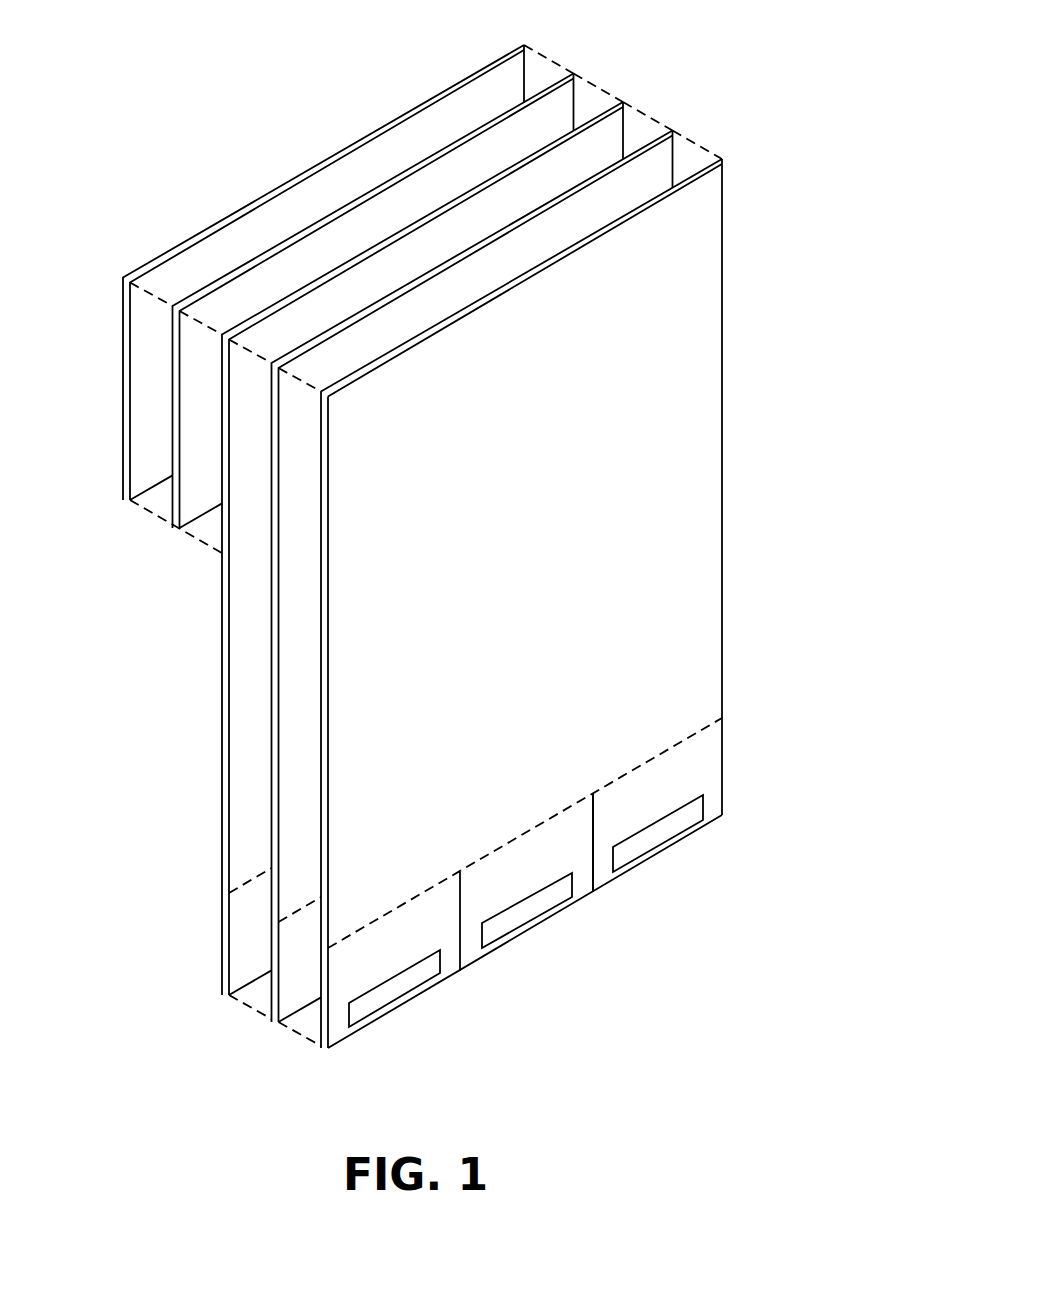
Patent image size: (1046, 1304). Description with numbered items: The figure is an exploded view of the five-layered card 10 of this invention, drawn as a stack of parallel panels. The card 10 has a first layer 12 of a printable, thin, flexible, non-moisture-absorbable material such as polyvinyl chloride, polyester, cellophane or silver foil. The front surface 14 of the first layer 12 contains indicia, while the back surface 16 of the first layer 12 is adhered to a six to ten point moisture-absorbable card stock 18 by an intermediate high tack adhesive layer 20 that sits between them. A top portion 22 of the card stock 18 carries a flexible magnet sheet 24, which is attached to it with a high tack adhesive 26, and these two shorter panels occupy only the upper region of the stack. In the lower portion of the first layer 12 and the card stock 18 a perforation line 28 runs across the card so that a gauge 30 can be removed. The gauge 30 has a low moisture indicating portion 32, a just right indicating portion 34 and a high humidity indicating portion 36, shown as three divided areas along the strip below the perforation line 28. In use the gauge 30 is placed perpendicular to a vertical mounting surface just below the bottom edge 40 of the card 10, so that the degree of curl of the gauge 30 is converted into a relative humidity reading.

The card 10 is at (530, 35).
The first layer 12 is at (324, 1048).
The front surface 14 is at (673, 392).
The back surface 16 is at (318, 730).
The card stock 18 is at (227, 995).
The intermediate high tack adhesive layer 20 is at (276, 1022).
The top portion 22 is at (228, 477).
The flexible magnet sheet 24 is at (132, 502).
The high tack adhesive 26 is at (176, 530).
The perforation line 28 is at (695, 737).
The gauge 30 is at (728, 790).
The low moisture indicating portion 32 is at (447, 963).
The just right indicating portion 34 is at (582, 885).
The high humidity indicating portion 36 is at (713, 808).
The bottom edge 40 is at (667, 752).